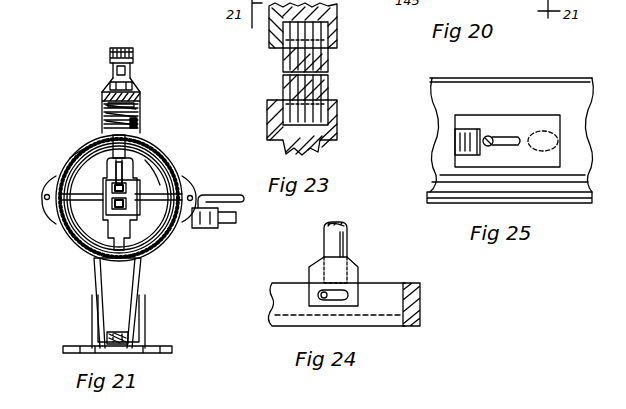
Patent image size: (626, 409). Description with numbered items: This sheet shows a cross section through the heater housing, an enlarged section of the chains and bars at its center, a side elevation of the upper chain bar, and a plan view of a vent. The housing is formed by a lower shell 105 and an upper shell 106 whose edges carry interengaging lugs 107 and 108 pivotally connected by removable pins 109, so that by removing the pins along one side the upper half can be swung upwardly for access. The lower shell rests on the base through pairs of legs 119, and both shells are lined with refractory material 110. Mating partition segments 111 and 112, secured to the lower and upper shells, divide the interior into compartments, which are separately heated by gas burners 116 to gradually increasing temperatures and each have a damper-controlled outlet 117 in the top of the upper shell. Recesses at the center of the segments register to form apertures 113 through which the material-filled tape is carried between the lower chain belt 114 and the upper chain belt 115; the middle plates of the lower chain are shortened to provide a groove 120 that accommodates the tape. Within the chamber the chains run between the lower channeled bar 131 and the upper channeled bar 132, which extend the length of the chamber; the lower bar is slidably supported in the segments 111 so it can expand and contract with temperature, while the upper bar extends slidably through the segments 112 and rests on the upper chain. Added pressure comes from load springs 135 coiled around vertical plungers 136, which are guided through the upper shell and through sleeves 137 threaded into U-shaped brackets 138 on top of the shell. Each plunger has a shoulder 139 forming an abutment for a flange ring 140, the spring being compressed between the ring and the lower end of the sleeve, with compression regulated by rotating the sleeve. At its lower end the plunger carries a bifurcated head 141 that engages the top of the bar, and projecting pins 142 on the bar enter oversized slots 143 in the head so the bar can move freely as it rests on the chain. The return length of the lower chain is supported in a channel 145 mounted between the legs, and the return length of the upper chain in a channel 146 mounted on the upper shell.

In FIG. 21, the lower shell 105 is at (86, 234).
In FIG. 21, the upper shell 106 is at (72, 158).
In FIG. 25, the upper shell 106 is at (455, 142).
In FIG. 21, the interengaging lugs 107 is at (50, 208).
In FIG. 21, the interengaging lugs 108 is at (56, 180).
In FIG. 21, the removable pins 109 is at (44, 197).
In FIG. 21, the refractory material 110 is at (140, 139).
In FIG. 21, the lower partition segments 111 is at (80, 248).
In FIG. 21, the upper partition segments 112 is at (148, 160).
In FIG. 21, the apertures 113 is at (112, 190).
In FIG. 21, the lower chain belt 114 is at (112, 204).
In FIG. 23, the lower chain belt 114 is at (329, 88).
In FIG. 21, the upper chain belt 115 is at (121, 52).
In FIG. 23, the upper chain belt 115 is at (329, 60).
In FIG. 21, the gas burners 116 is at (160, 212).
In FIG. 25, the damper-controlled outlet 117 is at (548, 141).
In FIG. 21, the legs 119 is at (98, 281).
In FIG. 23, the groove 120 is at (287, 82).
In FIG. 21, the lower channeled bar 131 is at (140, 238).
In FIG. 23, the lower channeled bar 131 is at (330, 115).
In FIG. 21, the upper channeled bar 132 is at (115, 183).
In FIG. 23, the upper channeled bar 132 is at (338, 25).
In FIG. 24, the upper channeled bar 132 is at (280, 298).
In FIG. 21, the load springs 135 is at (103, 112).
In FIG. 21, the vertical plungers 136 is at (114, 70).
In FIG. 24, the vertical plungers 136 is at (346, 233).
In FIG. 21, the sleeves 137 is at (128, 78).
In FIG. 21, the U-shaped brackets 138 is at (139, 92).
In FIG. 21, the shoulder 139 is at (137, 128).
In FIG. 21, the flange ring 140 is at (139, 109).
In FIG. 21, the bifurcated heads 141 is at (114, 170).
In FIG. 24, the bifurcated heads 141 is at (318, 262).
In FIG. 24, the projecting pins 142 is at (322, 292).
In FIG. 24, the slots 143 is at (345, 295).
In FIG. 21, the channel 145 is at (128, 340).
In FIG. 21, the channel 146 is at (131, 56).